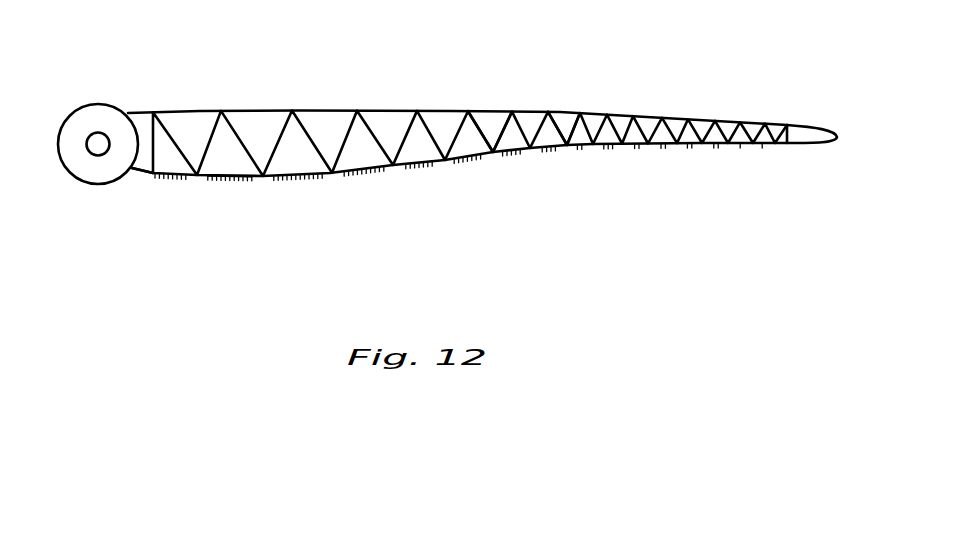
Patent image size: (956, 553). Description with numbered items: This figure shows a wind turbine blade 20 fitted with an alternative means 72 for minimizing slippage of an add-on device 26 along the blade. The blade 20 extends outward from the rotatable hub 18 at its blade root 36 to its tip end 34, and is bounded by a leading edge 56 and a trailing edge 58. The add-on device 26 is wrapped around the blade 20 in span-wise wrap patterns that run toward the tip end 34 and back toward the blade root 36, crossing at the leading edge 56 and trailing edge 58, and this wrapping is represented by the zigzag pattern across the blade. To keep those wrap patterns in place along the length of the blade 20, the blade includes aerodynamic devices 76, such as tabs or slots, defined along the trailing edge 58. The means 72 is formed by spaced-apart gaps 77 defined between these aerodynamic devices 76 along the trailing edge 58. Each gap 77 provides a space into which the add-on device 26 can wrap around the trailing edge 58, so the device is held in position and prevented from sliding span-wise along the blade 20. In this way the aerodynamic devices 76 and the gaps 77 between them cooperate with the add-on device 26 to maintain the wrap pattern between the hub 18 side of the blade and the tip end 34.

The rotor blade 20 is at (713, 81).
The hub 18 is at (84, 106).
The leading edge 56 is at (263, 111).
The add-on device 26 is at (522, 127).
The tip end 34 is at (835, 138).
The aerodynamic devices 76 is at (362, 177).
The blade root 36 is at (137, 152).
The means to minimize slippage 72 is at (262, 196).
The gaps 77 is at (493, 153).
The trailing edge 58 is at (570, 147).